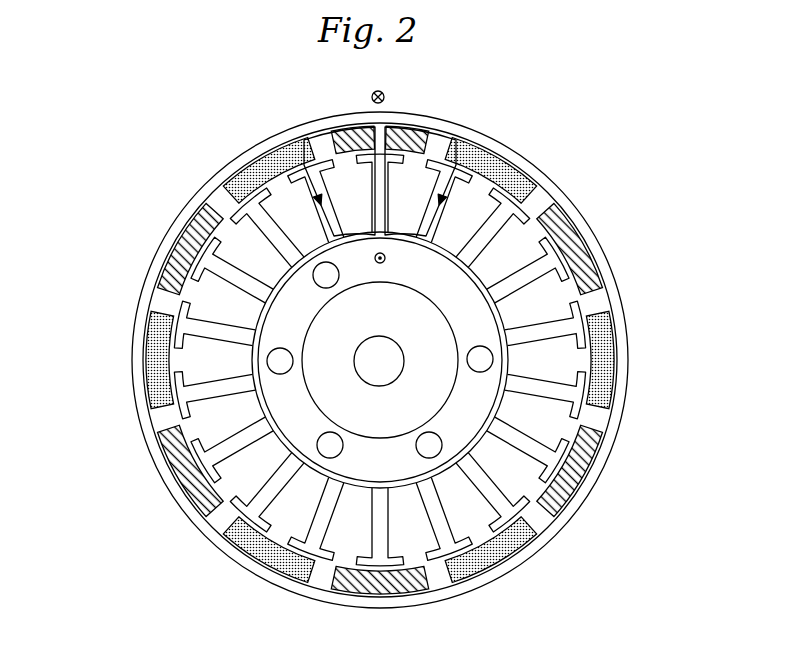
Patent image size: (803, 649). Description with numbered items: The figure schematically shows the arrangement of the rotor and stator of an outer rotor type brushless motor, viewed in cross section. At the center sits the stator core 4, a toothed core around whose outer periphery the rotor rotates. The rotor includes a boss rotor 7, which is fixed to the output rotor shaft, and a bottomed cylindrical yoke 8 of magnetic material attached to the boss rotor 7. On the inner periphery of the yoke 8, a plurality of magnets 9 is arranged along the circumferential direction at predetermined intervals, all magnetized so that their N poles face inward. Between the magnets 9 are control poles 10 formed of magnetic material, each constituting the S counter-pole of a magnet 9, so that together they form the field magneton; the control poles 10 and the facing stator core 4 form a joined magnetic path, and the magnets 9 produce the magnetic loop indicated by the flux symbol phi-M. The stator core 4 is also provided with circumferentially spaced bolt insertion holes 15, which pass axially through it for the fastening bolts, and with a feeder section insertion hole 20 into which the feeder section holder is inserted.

The stator core 4 is at (520, 437).
The boss rotor 7 is at (277, 400).
The yoke 8 is at (628, 380).
The magnets 9 is at (503, 170).
The control poles 10 is at (600, 240).
The bolt insertion holes 15 is at (326, 272).
The feeder section insertion hole 20 is at (272, 362).